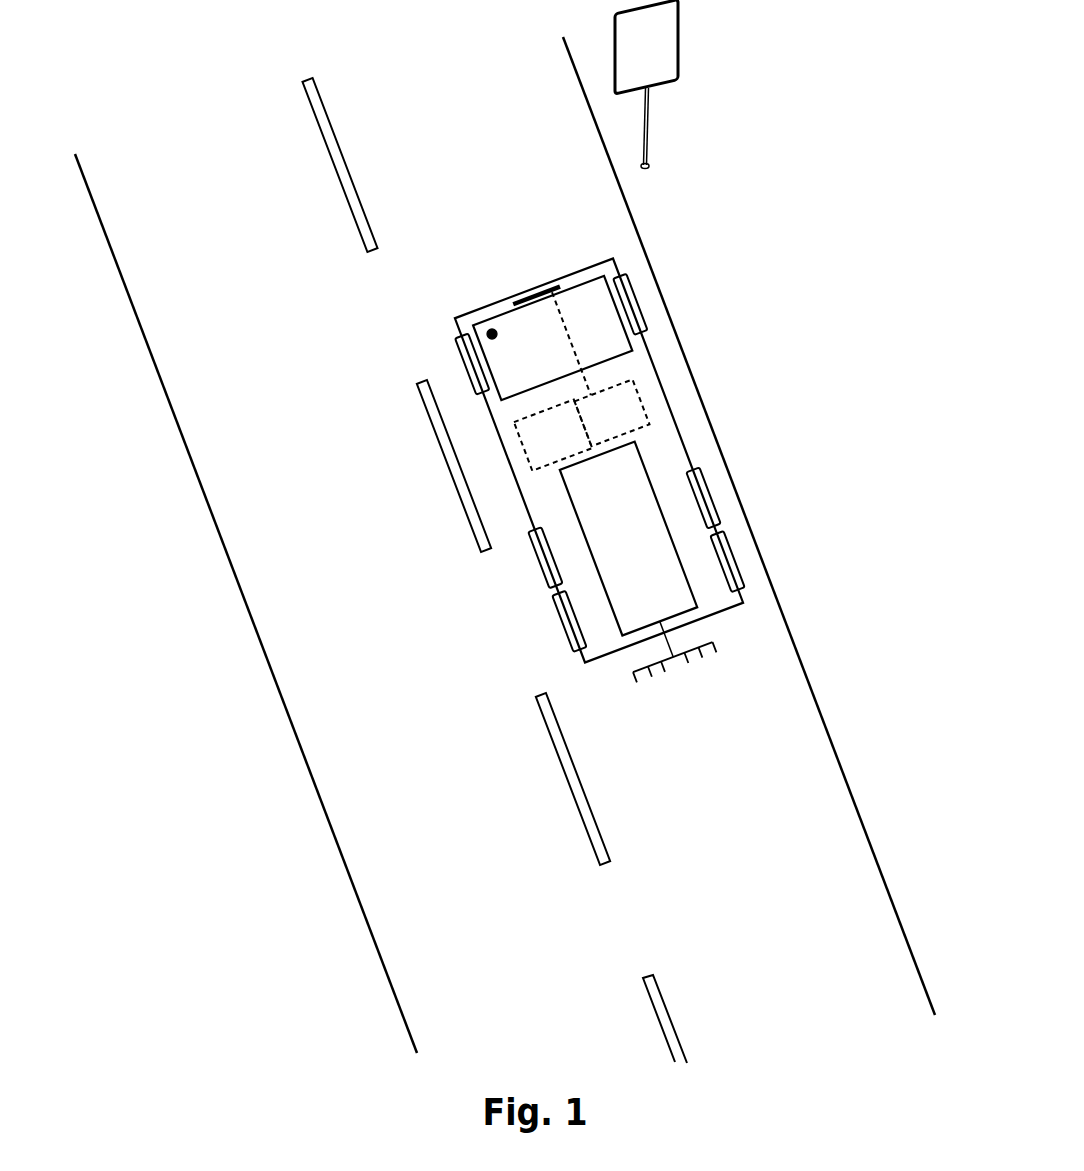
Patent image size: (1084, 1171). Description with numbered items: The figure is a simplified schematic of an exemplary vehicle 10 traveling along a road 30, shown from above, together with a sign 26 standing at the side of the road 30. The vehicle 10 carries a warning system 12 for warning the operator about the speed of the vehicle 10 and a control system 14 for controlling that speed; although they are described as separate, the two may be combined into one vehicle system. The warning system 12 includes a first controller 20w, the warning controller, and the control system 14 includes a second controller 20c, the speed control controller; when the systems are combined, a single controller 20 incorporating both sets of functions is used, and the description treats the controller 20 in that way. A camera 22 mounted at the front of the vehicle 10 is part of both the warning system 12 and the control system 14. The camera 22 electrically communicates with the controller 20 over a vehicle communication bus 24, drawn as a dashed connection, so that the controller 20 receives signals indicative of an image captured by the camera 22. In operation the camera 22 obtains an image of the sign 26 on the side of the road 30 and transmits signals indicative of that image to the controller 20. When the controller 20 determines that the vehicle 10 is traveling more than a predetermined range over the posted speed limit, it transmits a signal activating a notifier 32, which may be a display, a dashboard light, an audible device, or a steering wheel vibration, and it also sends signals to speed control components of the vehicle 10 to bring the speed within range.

The vehicle 10 is at (660, 383).
The warning system 12 is at (533, 504).
The control system 14 is at (601, 499).
The controller 20 is at (611, 379).
The first controller 20w is at (532, 448).
The second controller 20c is at (638, 423).
The camera 22 is at (537, 293).
The vehicle communication bus 24 is at (570, 340).
The sign 26 is at (678, 42).
The road 30 is at (679, 772).
The notifier 32 is at (490, 332).